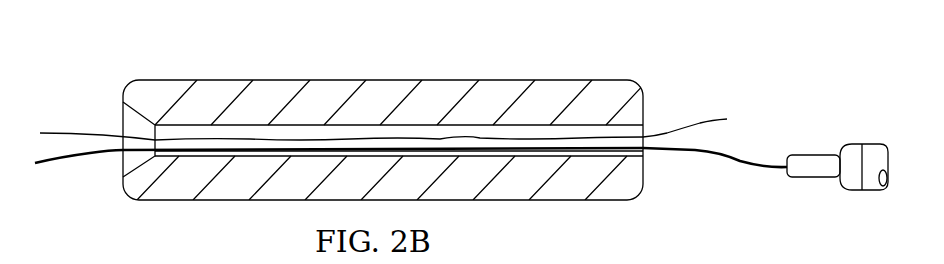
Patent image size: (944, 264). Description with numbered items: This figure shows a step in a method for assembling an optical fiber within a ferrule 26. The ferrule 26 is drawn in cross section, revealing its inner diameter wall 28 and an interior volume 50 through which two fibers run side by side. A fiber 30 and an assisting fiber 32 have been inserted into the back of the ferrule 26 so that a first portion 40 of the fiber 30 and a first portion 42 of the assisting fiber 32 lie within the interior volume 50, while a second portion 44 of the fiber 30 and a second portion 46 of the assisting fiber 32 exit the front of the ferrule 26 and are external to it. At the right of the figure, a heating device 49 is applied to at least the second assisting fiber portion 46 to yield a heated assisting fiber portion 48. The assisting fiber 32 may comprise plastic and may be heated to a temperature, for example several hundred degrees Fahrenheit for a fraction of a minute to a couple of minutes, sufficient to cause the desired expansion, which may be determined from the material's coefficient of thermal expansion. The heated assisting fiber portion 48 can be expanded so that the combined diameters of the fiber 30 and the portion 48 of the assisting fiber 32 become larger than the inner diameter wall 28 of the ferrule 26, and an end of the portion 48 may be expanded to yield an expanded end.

The ferrule 26 is at (370, 80).
The inner diameter wall 28 is at (543, 160).
The fiber 30 is at (67, 132).
The assisting fiber 32 is at (78, 158).
The first portion of fiber 40 is at (257, 139).
The first portion of assisting fiber 42 is at (205, 157).
The second portion of fiber 44 is at (665, 128).
The second portion of assisting fiber 46 is at (662, 153).
The heated assisting fiber portion 48 is at (788, 184).
The heating device 49 is at (836, 132).
The interior volume 50 is at (188, 132).